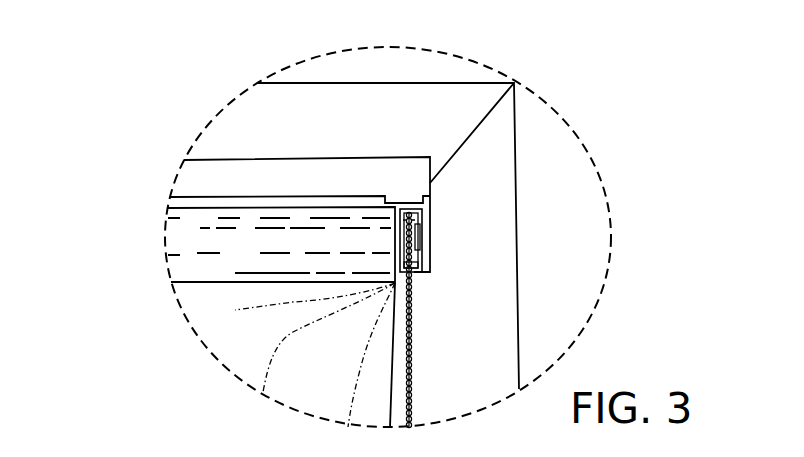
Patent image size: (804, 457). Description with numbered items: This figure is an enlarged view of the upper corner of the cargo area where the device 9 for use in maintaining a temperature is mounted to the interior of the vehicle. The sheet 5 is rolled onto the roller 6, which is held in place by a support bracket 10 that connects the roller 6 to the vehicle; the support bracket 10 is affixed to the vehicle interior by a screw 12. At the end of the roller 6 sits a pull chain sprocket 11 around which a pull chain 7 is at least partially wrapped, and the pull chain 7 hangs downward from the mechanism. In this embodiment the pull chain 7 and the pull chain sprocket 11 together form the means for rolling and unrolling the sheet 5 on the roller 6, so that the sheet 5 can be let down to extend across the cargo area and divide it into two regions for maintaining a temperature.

The sheet 5 is at (244, 332).
The roller 6 is at (430, 225).
The pull chain 7 is at (390, 253).
The device for use in maintaining a temperature 9 is at (150, 232).
The support bracket 10 is at (430, 252).
The pull chain sprocket 11 is at (423, 276).
The screw 12 is at (430, 212).